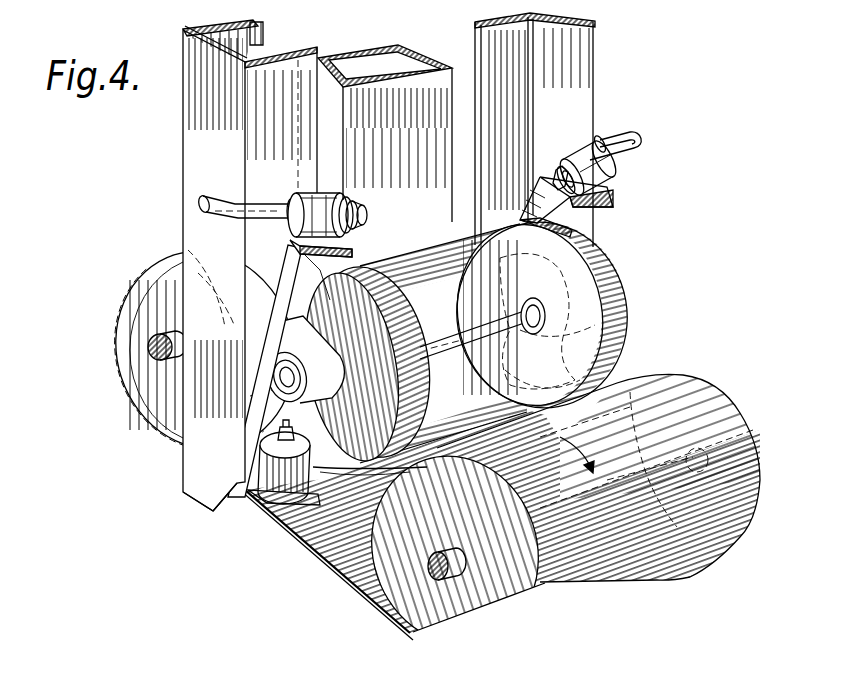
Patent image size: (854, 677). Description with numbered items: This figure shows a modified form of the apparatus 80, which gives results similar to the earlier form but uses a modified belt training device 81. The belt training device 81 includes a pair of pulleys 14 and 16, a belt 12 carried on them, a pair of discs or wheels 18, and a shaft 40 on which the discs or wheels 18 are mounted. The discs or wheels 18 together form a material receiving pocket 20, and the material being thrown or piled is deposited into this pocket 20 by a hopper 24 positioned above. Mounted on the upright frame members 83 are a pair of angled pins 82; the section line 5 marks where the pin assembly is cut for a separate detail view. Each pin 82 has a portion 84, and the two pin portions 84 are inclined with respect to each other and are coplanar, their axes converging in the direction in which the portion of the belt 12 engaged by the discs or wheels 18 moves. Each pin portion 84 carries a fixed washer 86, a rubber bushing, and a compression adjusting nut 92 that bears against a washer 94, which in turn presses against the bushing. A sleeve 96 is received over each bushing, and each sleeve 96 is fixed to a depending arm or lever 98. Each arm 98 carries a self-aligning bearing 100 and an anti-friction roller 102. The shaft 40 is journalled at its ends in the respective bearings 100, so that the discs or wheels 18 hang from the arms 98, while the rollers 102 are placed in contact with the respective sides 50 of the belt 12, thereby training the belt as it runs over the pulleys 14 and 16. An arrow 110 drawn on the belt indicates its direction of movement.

The section line 5 is at (200, 201).
The belt 12 is at (727, 510).
The pulley 14 is at (147, 373).
The pulley 16 is at (397, 573).
The discs or wheels 18 is at (600, 290).
The material receiving pocket 20 is at (608, 368).
The hopper 24 is at (413, 65).
The shaft 40 is at (557, 283).
The sides of the belt 50 is at (357, 470).
The apparatus 80 is at (172, 491).
The belt training device 81 is at (236, 494).
The angled pin 82 is at (213, 213).
The frame member 83 is at (200, 88).
The pin portion 84 is at (262, 250).
The fixed washer 86 is at (288, 200).
The compression adjusting nut 92 is at (360, 207).
The washer 94 is at (347, 193).
The sleeve 96 is at (298, 195).
The depending arm or lever 98 is at (287, 270).
The self-aligning bearing 100 is at (280, 347).
The anti-friction roller 102 is at (267, 497).
The direction of rotation arrow 110 is at (704, 423).